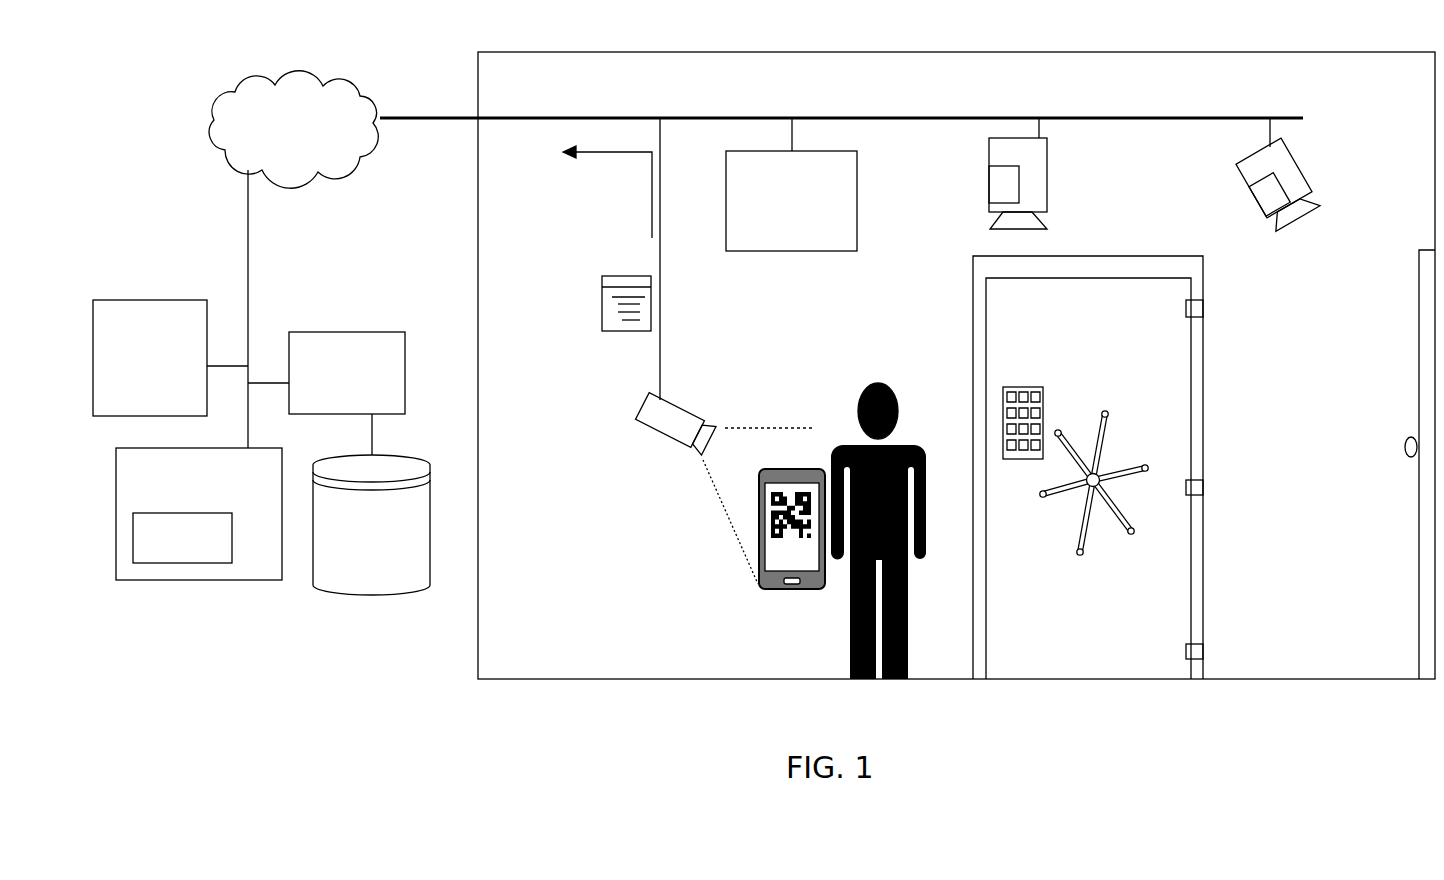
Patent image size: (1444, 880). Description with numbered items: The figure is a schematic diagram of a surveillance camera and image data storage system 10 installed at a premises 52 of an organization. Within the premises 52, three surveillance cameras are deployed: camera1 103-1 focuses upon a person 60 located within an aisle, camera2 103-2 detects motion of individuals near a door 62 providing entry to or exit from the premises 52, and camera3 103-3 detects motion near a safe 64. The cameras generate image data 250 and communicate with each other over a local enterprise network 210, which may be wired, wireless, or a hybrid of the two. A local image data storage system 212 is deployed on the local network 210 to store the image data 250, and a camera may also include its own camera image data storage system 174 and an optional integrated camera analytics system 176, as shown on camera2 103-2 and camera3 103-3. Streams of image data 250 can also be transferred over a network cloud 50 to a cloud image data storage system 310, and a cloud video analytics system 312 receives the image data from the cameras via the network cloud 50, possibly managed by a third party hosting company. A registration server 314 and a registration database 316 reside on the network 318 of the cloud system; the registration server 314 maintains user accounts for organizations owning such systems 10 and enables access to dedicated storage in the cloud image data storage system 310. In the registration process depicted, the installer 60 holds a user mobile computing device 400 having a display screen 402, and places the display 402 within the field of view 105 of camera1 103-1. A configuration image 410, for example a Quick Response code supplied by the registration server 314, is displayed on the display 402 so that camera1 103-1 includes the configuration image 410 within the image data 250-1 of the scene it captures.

The surveillance camera and image data storage system 10 is at (1131, 44).
The network cloud 50 is at (293, 129).
The premises 52 is at (683, 52).
The person 60 is at (862, 397).
The door 62 is at (1415, 283).
The safe 64 is at (1090, 300).
The camera1 103-1 is at (634, 418).
The camera2 103-2 is at (1279, 187).
The camera3 103-3 is at (1035, 173).
The field of view 105 is at (790, 428).
The camera image data storage system 174 is at (1244, 174).
The camera analytics system 176 is at (1000, 166).
The local network 210 is at (607, 118).
The local image data storage system 212 is at (791, 184).
The image data 250 is at (182, 538).
The image data 250-1 is at (622, 301).
The cloud image data storage system 310 is at (199, 514).
The cloud video analytics system 312 is at (150, 358).
The registration server 314 is at (347, 373).
The registration database 316 is at (371, 525).
The network 318 is at (248, 224).
The user mobile computing device 400 is at (749, 533).
The display screen 402 is at (760, 585).
The configuration image 410 is at (792, 540).